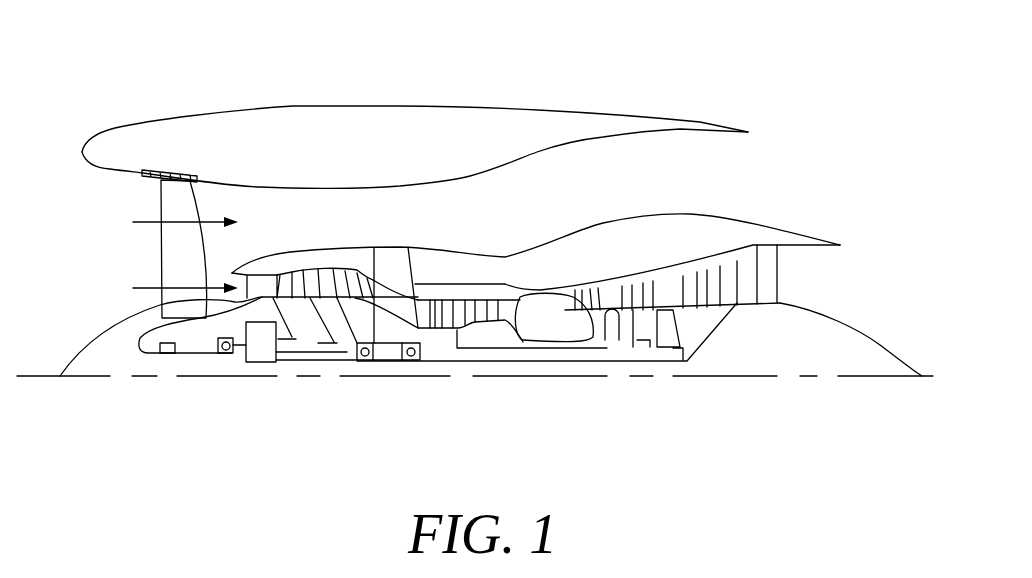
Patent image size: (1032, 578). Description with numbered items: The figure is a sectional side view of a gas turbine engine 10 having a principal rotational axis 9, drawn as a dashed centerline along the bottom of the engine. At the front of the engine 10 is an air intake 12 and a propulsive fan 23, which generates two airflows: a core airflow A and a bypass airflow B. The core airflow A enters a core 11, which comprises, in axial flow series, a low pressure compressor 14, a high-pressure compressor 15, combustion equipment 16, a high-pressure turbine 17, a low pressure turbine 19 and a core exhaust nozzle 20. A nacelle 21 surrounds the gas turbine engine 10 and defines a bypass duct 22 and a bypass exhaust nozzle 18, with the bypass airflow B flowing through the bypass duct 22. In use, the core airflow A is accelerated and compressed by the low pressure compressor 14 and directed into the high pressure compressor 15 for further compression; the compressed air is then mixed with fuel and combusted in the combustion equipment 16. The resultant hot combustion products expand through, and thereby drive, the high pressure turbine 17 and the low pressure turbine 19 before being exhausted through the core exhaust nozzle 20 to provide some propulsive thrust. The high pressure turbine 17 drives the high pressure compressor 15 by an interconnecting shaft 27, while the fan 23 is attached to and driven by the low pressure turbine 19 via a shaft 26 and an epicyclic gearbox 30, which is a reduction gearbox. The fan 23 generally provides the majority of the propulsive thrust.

The principal rotational axis 9 is at (787, 378).
The gas turbine engine 10 is at (407, 111).
The core 11 is at (519, 273).
The air intake 12 is at (134, 245).
The low pressure compressor 14 is at (330, 278).
The high-pressure compressor 15 is at (472, 310).
The combustion equipment 16 is at (550, 310).
The high-pressure turbine 17 is at (609, 290).
The bypass exhaust nozzle 18 is at (722, 170).
The low pressure turbine 19 is at (748, 263).
The core exhaust nozzle 20 is at (803, 277).
The nacelle 21 is at (388, 120).
The bypass duct 22 is at (673, 187).
The propulsive fan 23 is at (165, 253).
The shaft 26 is at (470, 360).
The interconnecting shaft 27 is at (507, 347).
The epicyclic gearbox 30 is at (258, 354).